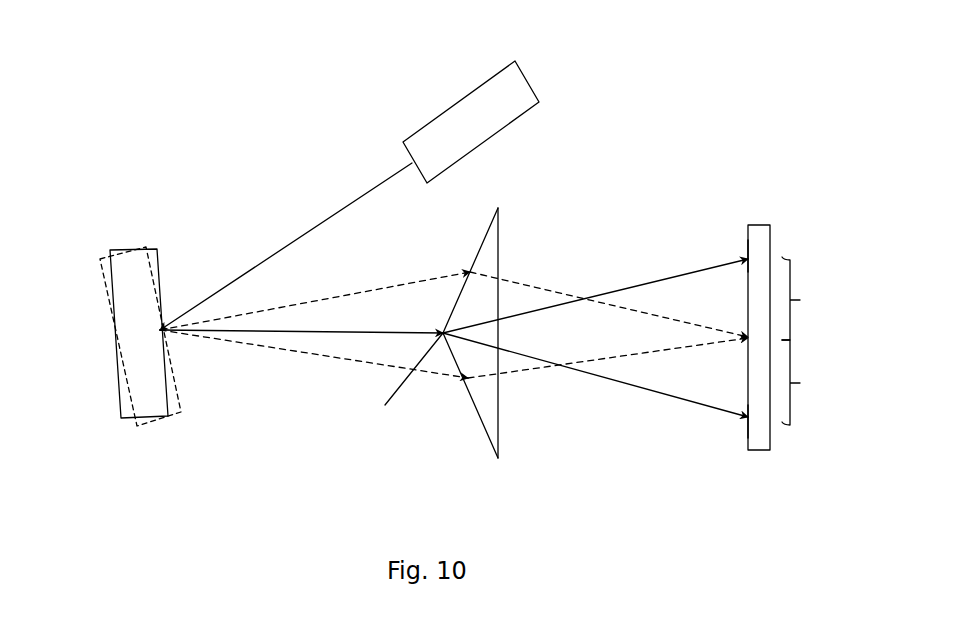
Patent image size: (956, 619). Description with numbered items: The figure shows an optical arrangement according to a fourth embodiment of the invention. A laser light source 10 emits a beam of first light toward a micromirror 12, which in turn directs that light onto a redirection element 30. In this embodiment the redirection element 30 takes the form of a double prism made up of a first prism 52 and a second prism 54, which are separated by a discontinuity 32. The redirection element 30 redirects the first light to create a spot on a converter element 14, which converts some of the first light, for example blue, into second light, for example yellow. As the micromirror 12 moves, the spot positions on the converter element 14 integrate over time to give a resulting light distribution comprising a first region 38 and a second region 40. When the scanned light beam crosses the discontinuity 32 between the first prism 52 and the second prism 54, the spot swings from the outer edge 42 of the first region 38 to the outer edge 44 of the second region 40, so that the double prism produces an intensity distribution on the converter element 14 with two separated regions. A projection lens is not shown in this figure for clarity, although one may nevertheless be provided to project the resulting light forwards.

The laser light source 10 is at (448, 143).
The micromirror 12 is at (130, 303).
The converter element 14 is at (755, 225).
The redirection element 30 is at (493, 433).
The discontinuity 32 is at (385, 405).
The first region 38 is at (810, 382).
The second region 40 is at (810, 298).
The outer edge of first region 42 is at (747, 423).
The outer edge of second region 44 is at (747, 256).
The first prism 52 is at (493, 258).
The second prism 54 is at (490, 405).